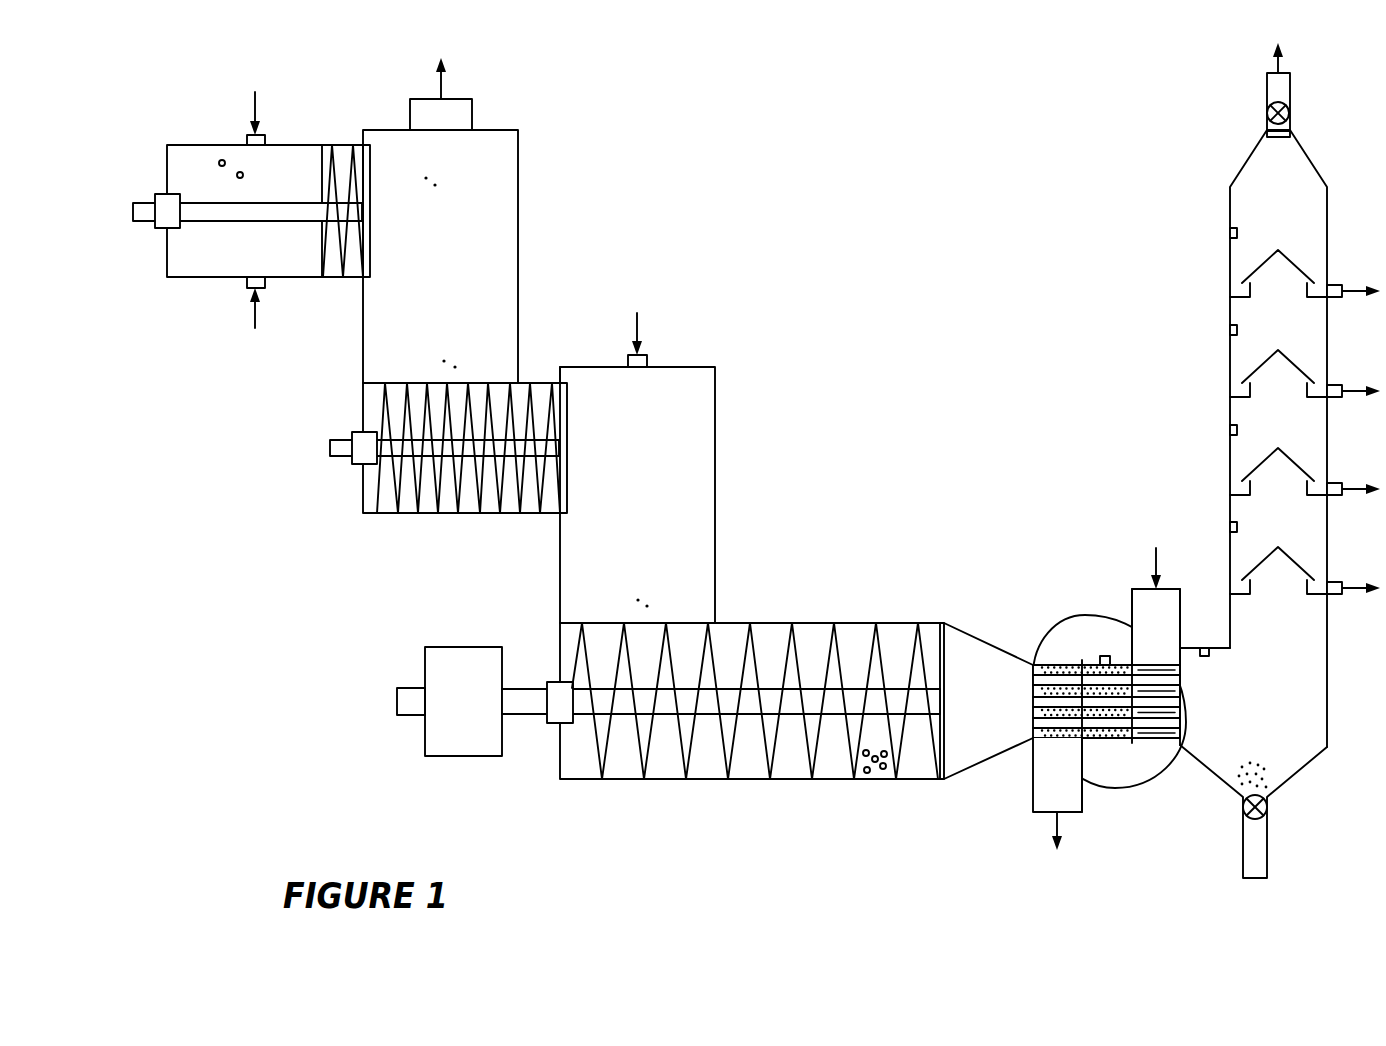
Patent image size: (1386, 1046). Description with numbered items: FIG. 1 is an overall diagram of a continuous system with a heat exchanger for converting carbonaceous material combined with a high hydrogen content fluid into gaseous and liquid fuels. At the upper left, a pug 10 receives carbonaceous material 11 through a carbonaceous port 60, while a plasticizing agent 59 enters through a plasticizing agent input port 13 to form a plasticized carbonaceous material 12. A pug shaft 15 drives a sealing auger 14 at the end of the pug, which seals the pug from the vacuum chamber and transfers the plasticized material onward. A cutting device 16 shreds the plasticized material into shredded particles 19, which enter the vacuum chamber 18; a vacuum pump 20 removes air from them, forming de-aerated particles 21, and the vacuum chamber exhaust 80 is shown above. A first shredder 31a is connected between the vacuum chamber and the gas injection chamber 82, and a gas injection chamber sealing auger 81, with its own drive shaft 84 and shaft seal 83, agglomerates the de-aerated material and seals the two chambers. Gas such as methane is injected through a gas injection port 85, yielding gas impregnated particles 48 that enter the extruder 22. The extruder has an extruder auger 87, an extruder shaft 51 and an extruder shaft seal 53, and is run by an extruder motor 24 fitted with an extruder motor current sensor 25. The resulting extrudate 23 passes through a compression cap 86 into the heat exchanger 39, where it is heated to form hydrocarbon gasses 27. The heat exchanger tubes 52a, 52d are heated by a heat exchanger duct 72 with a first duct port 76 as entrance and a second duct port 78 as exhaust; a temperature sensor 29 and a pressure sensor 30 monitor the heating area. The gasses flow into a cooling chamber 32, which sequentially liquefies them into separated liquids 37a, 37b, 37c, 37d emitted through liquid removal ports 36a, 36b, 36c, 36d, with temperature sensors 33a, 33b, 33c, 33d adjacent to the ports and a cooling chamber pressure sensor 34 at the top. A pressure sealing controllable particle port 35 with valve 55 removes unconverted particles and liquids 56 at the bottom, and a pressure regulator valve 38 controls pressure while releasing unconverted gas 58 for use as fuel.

The pug 10 is at (192, 145).
The carbonaceous material 11 is at (257, 102).
The plasticized carbonaceous material 12 is at (222, 159).
The plasticizing agent input port 13 is at (266, 283).
The sealing auger 14 is at (352, 272).
The pug shaft 15 is at (153, 196).
The cutting device 16 is at (366, 143).
The vacuum chamber 18 is at (519, 158).
The shredded particles 19 is at (437, 179).
The vacuum pump 20 is at (473, 113).
The de-aerated particles 21 is at (452, 363).
The extruder 22 is at (913, 603).
The extrudate 23 is at (887, 772).
The extruder motor 24 is at (461, 757).
The extruder motor current sensor 25 is at (408, 716).
The hydrocarbon gasses 27 is at (1160, 740).
The temperature sensor 29 is at (1099, 662).
The pressure sensor 30 is at (1209, 654).
The first shredder 31a is at (563, 378).
The cooling chamber 32 is at (1363, 121).
The temperature sensor 33a is at (1228, 520).
The temperature sensor 33b is at (1228, 423).
The temperature sensor 33c is at (1228, 323).
The temperature sensor 33d is at (1228, 226).
The cooling chamber pressure sensor 34 is at (1293, 134).
The pressure sealing controllable particle port 35 is at (1268, 845).
The liquid removal port 36a is at (1334, 595).
The liquid removal port 36b is at (1334, 496).
The liquid removal port 36c is at (1334, 398).
The liquid removal port 36d is at (1334, 298).
The separated liquid 37a is at (1346, 585).
The separated liquid 37b is at (1346, 486).
The separated liquid 37c is at (1346, 388).
The separated liquid 37d is at (1346, 288).
The pressure regulator valve 38 is at (1271, 104).
The heat exchanger 39 is at (1031, 695).
The gas impregnated particles 48 is at (645, 602).
The extruder shaft 51 is at (532, 688).
The heat exchanger tube 52a is at (1052, 663).
The heat exchanger tube 52d is at (1160, 745).
The extruder shaft seal 53 is at (557, 681).
The valve 55 is at (1250, 820).
The particles and liquids 56 is at (1272, 781).
The unconverted gas 58 is at (1291, 75).
The plasticizing agent 59 is at (257, 318).
The carbonaceous port 60 is at (268, 138).
The heat exchanger duct 72 is at (1112, 789).
The first duct port 76 is at (1153, 565).
The second duct port 78 is at (1062, 828).
The vacuum chamber exhaust 80 is at (443, 82).
The gas injection chamber sealing auger 81 is at (447, 514).
The gas injection chamber 82 is at (717, 389).
The shaft seal 83 is at (360, 431).
The drive shaft 84 is at (342, 439).
The gas injection port 85 is at (648, 360).
The compression cap 86 is at (962, 630).
The extruder auger 87 is at (741, 780).